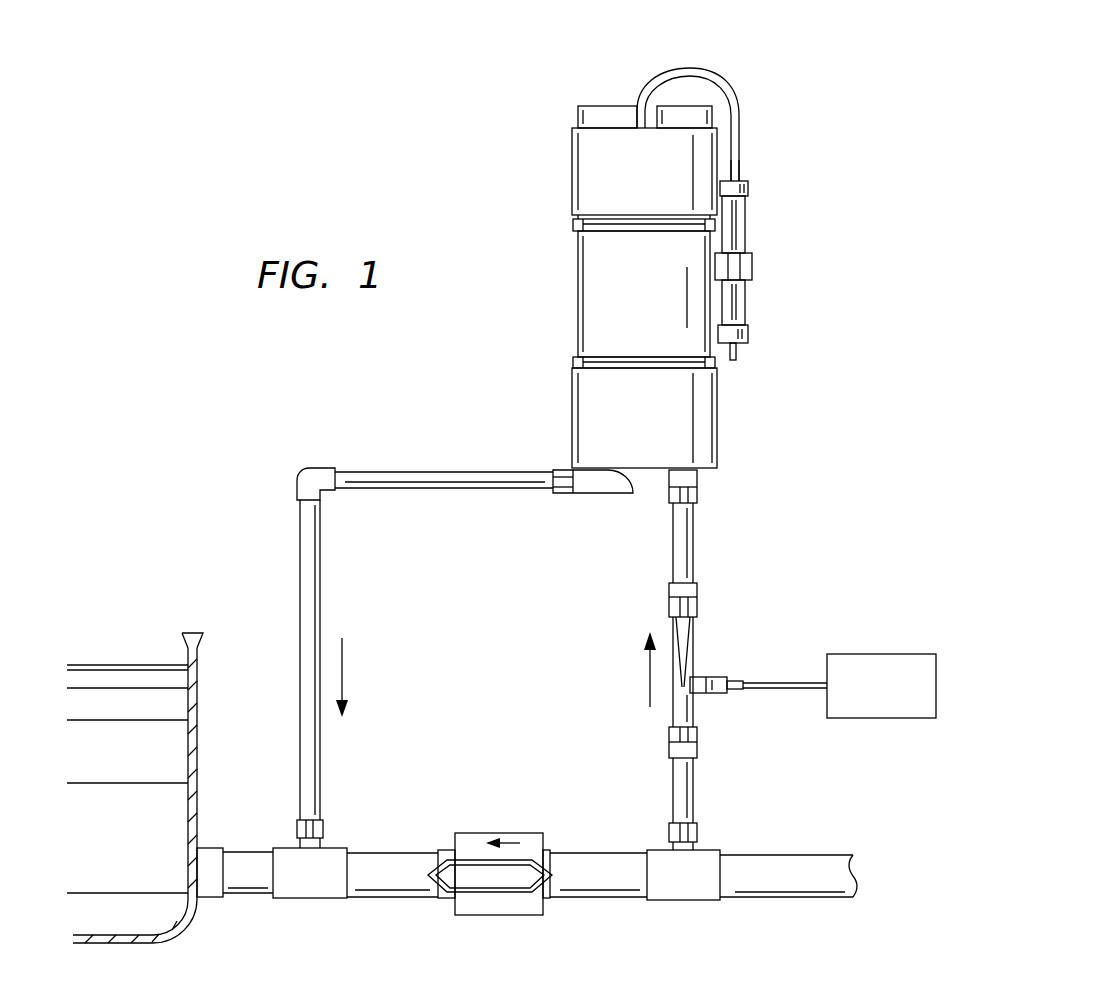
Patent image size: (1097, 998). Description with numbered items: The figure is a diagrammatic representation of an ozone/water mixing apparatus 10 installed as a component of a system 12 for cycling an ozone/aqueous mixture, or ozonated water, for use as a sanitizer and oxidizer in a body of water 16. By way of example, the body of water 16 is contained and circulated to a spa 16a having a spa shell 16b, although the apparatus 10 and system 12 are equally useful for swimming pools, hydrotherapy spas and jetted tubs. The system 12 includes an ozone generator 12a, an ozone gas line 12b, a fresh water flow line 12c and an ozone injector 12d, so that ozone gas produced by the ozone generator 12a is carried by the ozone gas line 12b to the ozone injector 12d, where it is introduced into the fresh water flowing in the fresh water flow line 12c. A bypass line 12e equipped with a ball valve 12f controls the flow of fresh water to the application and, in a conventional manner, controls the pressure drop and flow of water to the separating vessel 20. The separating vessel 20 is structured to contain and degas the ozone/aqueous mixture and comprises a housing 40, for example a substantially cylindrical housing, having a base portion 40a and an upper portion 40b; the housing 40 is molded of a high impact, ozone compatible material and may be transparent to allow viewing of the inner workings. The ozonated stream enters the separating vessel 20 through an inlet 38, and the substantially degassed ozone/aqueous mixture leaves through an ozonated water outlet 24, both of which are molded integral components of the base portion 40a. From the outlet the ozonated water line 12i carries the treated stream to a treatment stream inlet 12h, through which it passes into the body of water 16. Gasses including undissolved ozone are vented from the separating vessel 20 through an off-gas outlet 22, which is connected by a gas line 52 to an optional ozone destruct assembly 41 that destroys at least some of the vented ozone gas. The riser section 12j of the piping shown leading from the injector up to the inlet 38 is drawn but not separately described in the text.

The ozone/water mixing apparatus 10 is at (550, 244).
The system for cycling an ozone/aqueous mixture 12 is at (484, 400).
The ozone generator 12a is at (886, 703).
The ozone gas line 12b is at (790, 690).
The fresh water flow line 12c is at (690, 808).
The ozone injector 12d is at (696, 667).
The bypass line 12e is at (398, 862).
The ball valve 12f is at (520, 915).
The treatment stream inlet 12h is at (200, 858).
The ozonated water line 12i is at (382, 482).
The riser pipe section 12j is at (690, 560).
The body of water 16 is at (119, 767).
The spa 16a is at (180, 941).
The spa shell 16b is at (200, 700).
The separating vessel 20 is at (574, 305).
The off-gas outlet 22 is at (638, 120).
The ozonated water outlet 24 is at (610, 482).
The inlet 38 is at (690, 480).
The housing 40 is at (707, 393).
The base portion 40a is at (715, 445).
The upper portion 40b is at (578, 152).
The ozone destruct assembly 41 is at (750, 238).
The gas line 52 is at (745, 123).